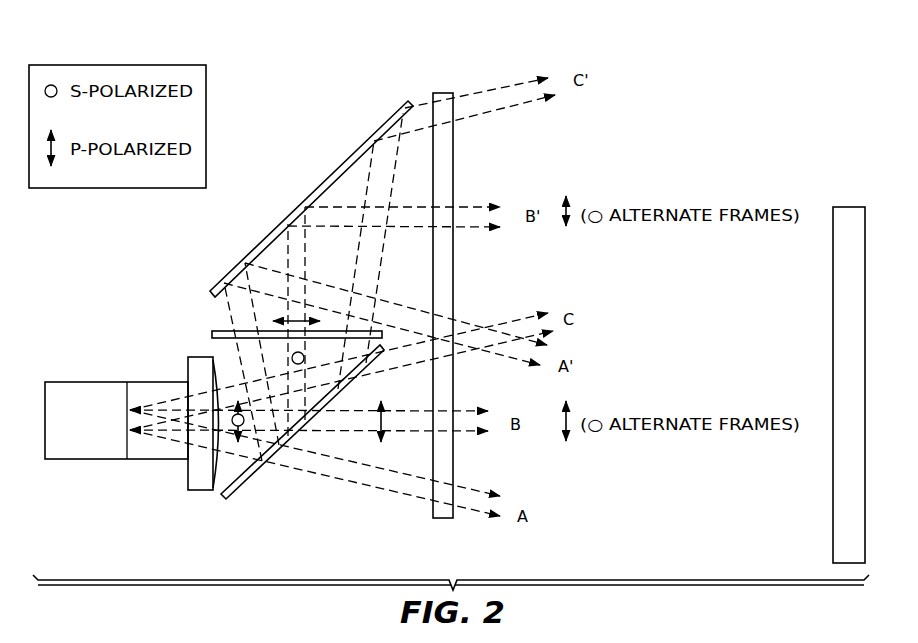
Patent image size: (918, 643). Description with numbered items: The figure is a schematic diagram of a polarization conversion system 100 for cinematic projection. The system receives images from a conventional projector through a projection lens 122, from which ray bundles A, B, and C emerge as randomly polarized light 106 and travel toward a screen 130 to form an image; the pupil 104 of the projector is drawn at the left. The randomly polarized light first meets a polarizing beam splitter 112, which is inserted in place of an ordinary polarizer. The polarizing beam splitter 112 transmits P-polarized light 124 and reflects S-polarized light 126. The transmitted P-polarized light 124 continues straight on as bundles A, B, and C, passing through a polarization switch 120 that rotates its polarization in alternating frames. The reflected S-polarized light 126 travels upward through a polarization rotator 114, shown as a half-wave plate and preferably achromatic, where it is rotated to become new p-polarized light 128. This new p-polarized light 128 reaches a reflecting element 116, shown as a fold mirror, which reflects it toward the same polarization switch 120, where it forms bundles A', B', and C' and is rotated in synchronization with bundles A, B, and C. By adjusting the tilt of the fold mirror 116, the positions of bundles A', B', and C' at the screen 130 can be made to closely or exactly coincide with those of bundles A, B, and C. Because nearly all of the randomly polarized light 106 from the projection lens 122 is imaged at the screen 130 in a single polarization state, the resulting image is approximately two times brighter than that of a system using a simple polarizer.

The polarization conversion system 100 is at (662, 74).
The pupil 104 is at (126, 433).
The randomly polarized light 106 is at (201, 412).
The polarizing beam splitter 112 is at (243, 486).
The polarization rotator 114 is at (220, 328).
The reflecting element 116 is at (331, 178).
The polarization switch 120 is at (443, 92).
The projection lens 122 is at (225, 466).
The P-polarized light 124 is at (391, 427).
The S-polarized light 126 is at (298, 364).
The p-polarized light 128 is at (297, 313).
The screen 130 is at (833, 342).